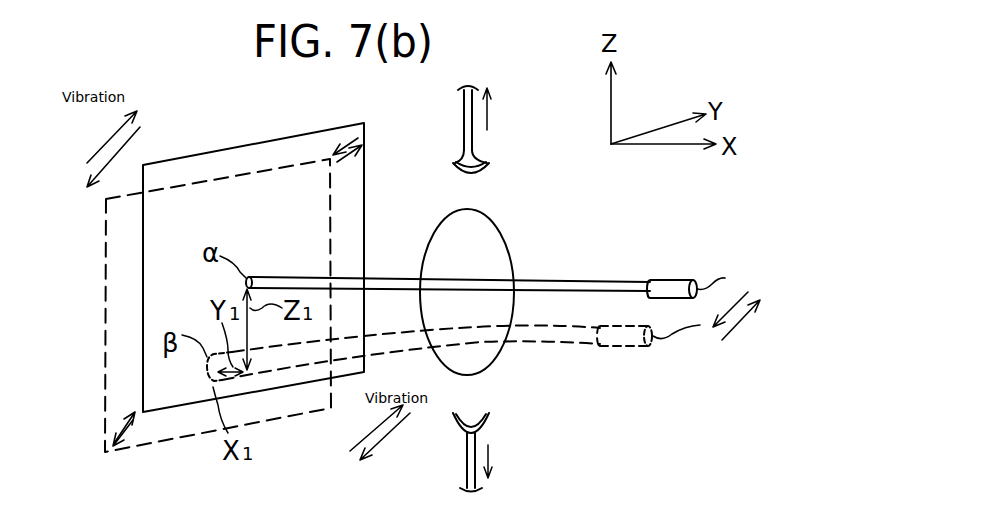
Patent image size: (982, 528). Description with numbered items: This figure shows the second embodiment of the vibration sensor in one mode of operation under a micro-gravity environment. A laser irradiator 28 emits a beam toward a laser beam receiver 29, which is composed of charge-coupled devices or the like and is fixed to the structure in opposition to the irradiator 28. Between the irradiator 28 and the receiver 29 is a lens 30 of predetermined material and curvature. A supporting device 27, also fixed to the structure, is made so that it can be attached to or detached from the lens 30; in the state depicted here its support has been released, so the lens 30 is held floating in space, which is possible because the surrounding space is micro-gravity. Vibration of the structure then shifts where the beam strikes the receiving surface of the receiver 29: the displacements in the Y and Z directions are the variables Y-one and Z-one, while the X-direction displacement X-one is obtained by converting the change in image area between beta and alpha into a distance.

The supporting device 27 is at (464, 110).
The laser irradiator 28 is at (672, 280).
The laser beam receiver 29 is at (233, 148).
The lens 30 is at (492, 221).